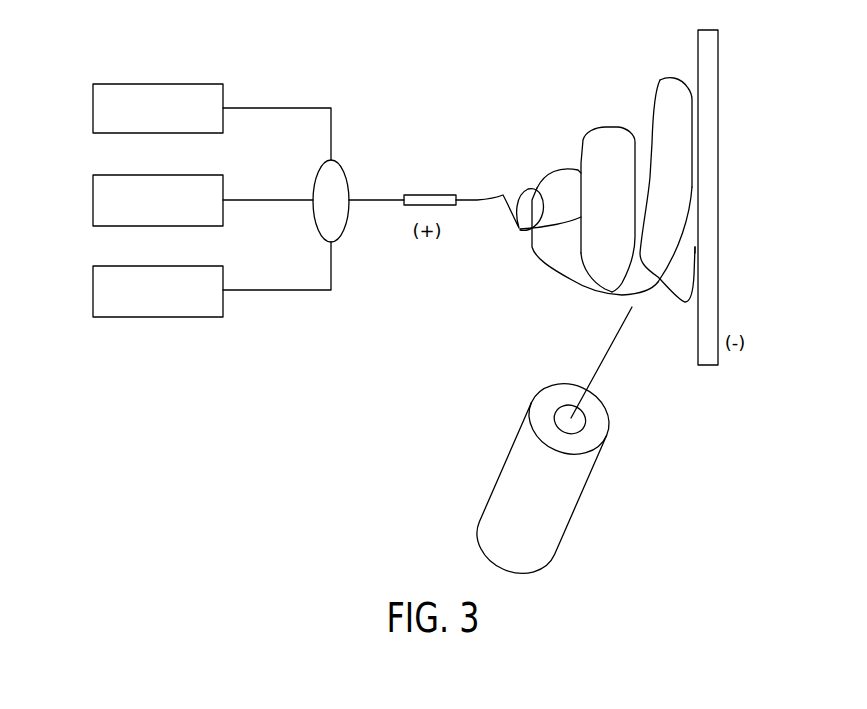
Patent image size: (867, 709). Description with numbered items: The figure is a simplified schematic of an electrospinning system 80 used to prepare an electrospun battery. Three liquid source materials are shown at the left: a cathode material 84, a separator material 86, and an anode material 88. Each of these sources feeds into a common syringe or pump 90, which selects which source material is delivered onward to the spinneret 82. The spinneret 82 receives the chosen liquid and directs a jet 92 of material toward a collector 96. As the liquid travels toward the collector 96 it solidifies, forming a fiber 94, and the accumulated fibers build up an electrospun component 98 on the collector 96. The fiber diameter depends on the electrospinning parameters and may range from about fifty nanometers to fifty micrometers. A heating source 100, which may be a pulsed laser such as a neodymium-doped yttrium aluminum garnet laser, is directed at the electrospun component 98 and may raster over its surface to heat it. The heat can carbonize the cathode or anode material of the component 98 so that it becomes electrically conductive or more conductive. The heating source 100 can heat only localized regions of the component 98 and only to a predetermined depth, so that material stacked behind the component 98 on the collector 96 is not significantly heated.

The electrospinning system 80 is at (305, 372).
The spinneret 82 is at (432, 193).
The cathode material 84 is at (92, 110).
The separator material 86 is at (92, 201).
The anode material 88 is at (92, 292).
The common syringe or pump 90 is at (336, 164).
The jet 92 is at (477, 201).
The fiber 94 is at (612, 126).
The collector 96 is at (708, 366).
The electrospun component 98 is at (697, 254).
The heating source 100 is at (588, 486).